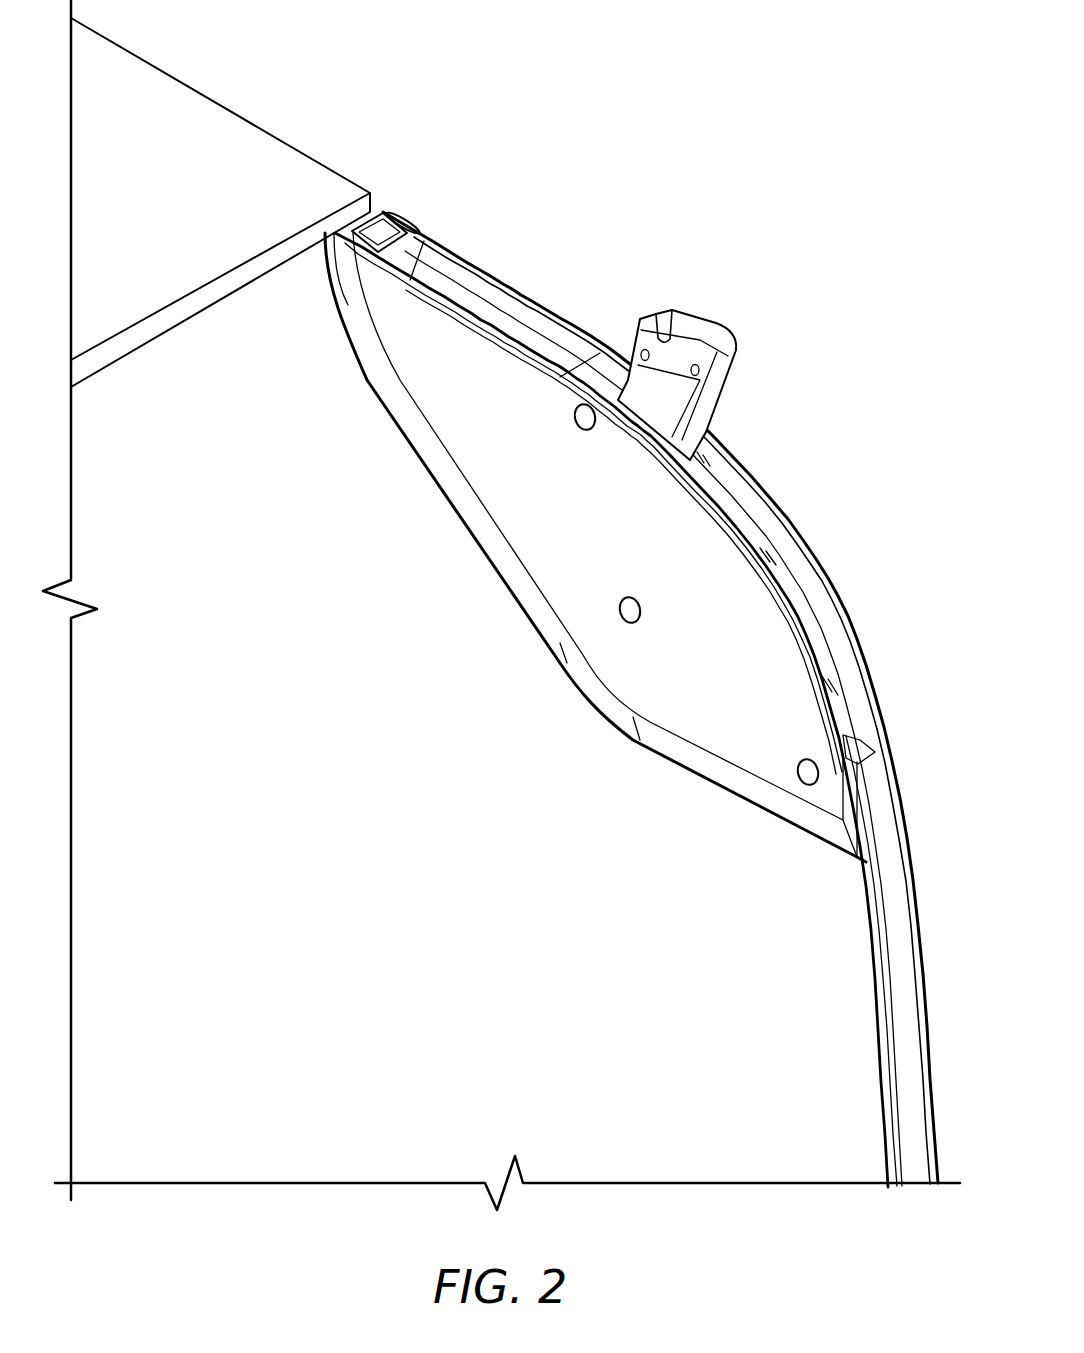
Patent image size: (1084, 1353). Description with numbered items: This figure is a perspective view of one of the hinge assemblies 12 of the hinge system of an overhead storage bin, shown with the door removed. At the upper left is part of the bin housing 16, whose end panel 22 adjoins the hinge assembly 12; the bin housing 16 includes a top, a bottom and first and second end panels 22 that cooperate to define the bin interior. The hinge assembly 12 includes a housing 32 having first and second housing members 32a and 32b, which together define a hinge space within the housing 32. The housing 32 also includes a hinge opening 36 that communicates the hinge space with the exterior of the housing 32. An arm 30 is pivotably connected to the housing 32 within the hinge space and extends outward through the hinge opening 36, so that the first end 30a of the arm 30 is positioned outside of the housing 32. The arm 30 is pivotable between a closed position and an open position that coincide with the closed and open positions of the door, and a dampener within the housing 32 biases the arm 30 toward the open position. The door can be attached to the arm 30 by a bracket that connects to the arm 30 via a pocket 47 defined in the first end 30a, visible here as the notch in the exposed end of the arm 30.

The hinge assembly 12 is at (642, 236).
The bin housing 16 is at (247, 153).
The end panel 22 is at (462, 961).
The arm 30 is at (703, 358).
The first end of the arm 30a is at (695, 324).
The housing 32 is at (498, 282).
The first housing member 32a is at (866, 665).
The second housing member 32b is at (517, 520).
The hinge opening 36 is at (748, 525).
The pocket 47 is at (683, 320).